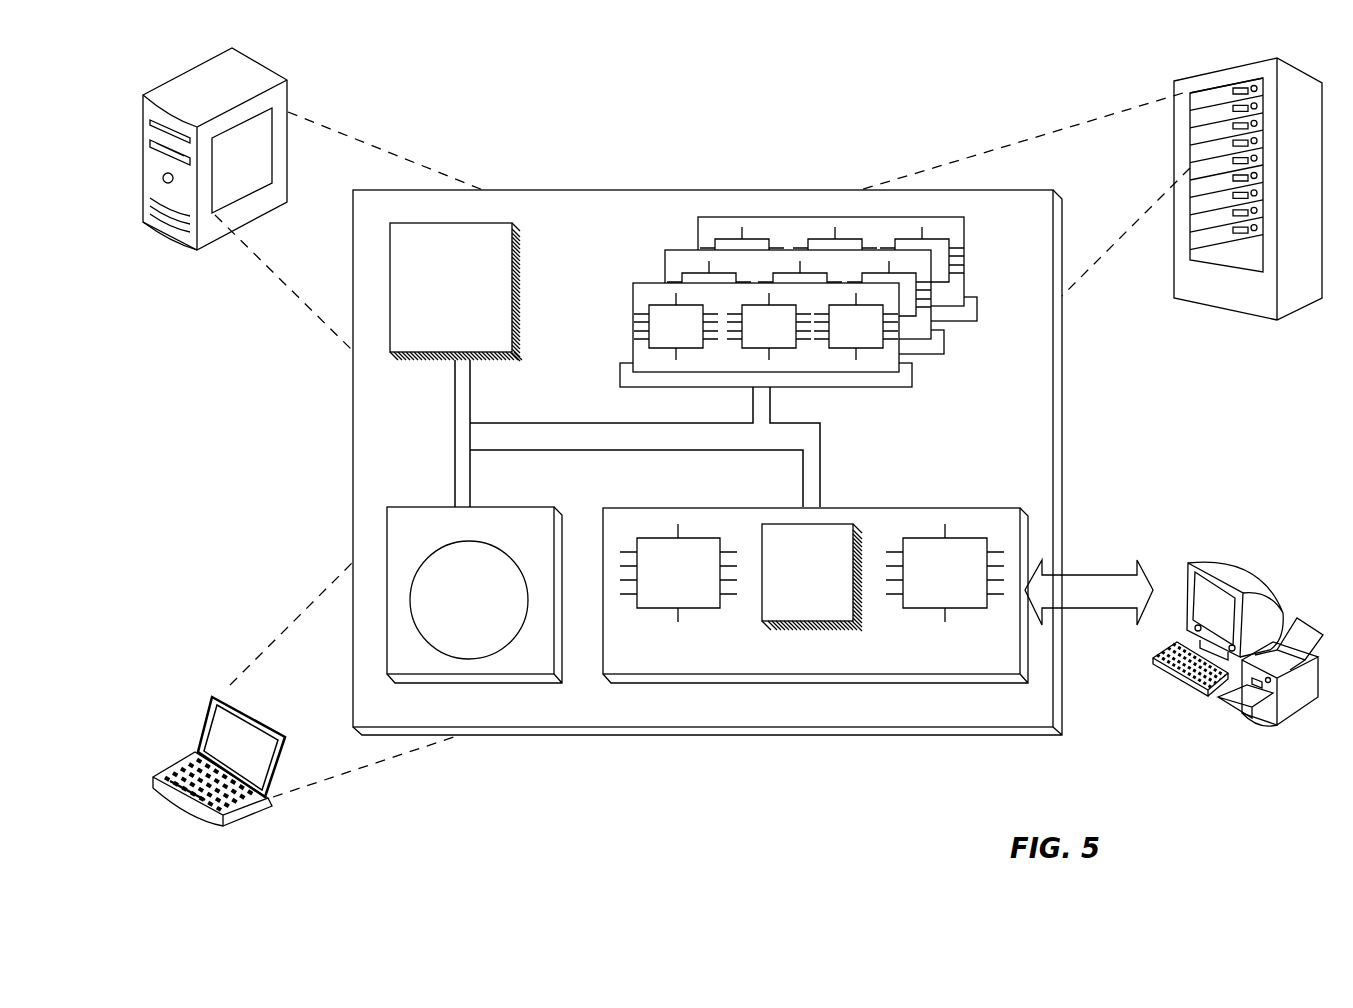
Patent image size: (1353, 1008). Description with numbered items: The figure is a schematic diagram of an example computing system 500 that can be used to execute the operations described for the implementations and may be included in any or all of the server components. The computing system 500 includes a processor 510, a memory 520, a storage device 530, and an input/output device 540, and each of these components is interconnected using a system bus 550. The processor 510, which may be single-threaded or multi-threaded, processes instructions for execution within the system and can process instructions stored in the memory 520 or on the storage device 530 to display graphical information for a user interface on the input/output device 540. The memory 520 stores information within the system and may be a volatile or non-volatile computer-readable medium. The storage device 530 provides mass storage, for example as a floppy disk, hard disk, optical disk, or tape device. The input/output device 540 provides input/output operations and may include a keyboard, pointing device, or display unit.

The computing system 500 is at (541, 118).
The processor 510 is at (456, 292).
The memory 520 is at (971, 350).
The storage device 530 is at (474, 595).
The input/output device 540 is at (1188, 568).
The system bus 550 is at (632, 441).